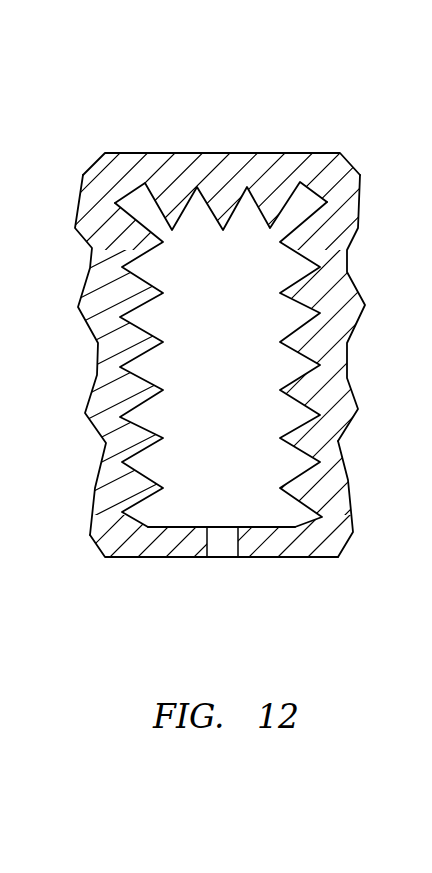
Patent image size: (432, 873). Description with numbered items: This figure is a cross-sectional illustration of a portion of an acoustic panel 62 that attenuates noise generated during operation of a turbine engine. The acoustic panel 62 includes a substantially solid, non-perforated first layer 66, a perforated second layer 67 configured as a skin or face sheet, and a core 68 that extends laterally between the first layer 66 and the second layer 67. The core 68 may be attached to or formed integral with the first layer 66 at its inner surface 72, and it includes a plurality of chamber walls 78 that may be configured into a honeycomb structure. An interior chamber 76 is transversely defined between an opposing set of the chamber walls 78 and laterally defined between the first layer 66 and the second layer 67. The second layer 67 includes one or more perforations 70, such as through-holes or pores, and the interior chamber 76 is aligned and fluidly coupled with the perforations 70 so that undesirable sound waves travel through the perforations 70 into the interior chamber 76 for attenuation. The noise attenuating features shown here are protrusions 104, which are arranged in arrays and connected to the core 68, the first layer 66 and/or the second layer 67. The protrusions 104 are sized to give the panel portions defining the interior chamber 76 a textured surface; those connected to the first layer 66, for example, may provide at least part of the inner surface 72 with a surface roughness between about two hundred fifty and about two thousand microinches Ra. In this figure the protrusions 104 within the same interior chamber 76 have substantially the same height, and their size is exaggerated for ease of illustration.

The acoustic panel 62 is at (222, 294).
The first layer 66 is at (211, 146).
The second layer 67 is at (311, 563).
The core 68 is at (350, 455).
The perforations 70 is at (221, 554).
The inner surface 72 is at (189, 208).
The interior chamber 76 is at (233, 389).
The chamber walls 78 is at (110, 297).
The protrusions 104 is at (271, 207).